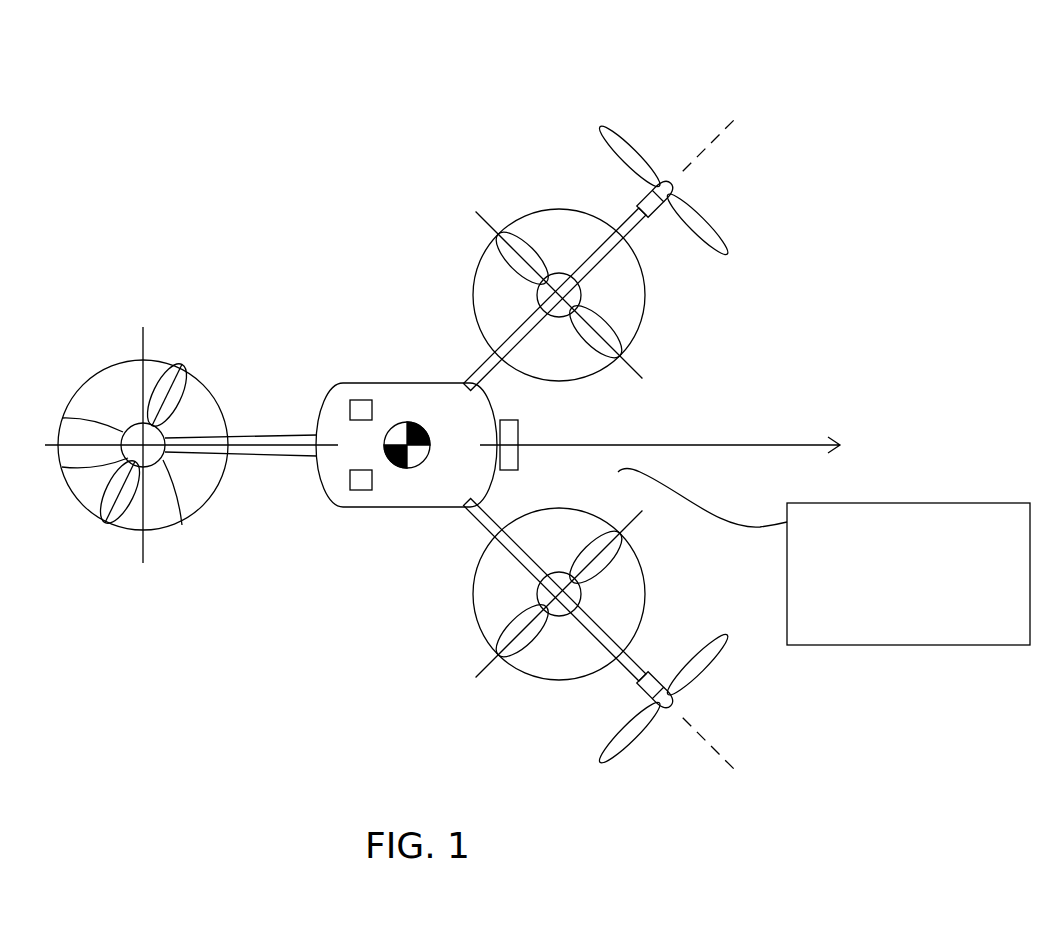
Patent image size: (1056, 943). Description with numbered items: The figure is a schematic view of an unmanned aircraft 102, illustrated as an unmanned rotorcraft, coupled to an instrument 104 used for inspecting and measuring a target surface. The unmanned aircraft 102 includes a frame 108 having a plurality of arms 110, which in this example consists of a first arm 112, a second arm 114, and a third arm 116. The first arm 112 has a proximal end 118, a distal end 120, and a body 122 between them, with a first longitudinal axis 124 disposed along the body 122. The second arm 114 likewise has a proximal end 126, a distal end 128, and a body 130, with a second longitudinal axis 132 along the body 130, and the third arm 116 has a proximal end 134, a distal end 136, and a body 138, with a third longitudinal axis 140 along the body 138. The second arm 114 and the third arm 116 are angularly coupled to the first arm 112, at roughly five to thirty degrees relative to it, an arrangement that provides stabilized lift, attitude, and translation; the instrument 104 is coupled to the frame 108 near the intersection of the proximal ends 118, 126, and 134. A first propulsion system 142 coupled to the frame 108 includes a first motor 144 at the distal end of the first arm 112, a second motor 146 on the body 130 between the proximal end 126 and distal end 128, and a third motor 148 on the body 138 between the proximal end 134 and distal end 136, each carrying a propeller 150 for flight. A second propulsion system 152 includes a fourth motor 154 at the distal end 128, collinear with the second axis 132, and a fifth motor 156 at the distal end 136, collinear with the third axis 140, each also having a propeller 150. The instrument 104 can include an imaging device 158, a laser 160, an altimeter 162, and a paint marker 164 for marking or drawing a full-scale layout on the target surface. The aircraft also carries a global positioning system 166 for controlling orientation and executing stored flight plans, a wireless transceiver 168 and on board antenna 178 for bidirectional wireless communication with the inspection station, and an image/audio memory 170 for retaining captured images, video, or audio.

The unmanned aircraft 102 is at (697, 72).
The instrument 104 is at (518, 460).
The frame 108 is at (241, 430).
The plurality of arms 110 is at (126, 308).
The first arm 112 is at (241, 430).
The second arm 114 is at (581, 276).
The third arm 116 is at (585, 616).
The proximal end 118 is at (318, 440).
The distal end 120 is at (182, 525).
The body 122 is at (278, 428).
The first longitudinal axis 124 is at (62, 467).
The proximal end 126 is at (462, 380).
The distal end 128 is at (636, 206).
The body 130 is at (476, 362).
The second longitudinal axis 132 is at (718, 134).
The proximal end 134 is at (458, 513).
The distal end 136 is at (637, 686).
The body 138 is at (510, 553).
The third longitudinal axis 140 is at (732, 766).
The first propulsion system 142 is at (180, 429).
The first motor 144 is at (62, 418).
The second motor 146 is at (582, 291).
The third motor 148 is at (560, 636).
The propeller 150 is at (166, 362).
The second propulsion system 152 is at (750, 222).
The fourth motor 154 is at (670, 172).
The fifth motor 156 is at (670, 708).
The imaging device 158 is at (906, 523).
The laser 160 is at (906, 557).
The altimeter 162 is at (906, 590).
The paint marker 164 is at (906, 623).
The global positioning system 166 is at (356, 400).
The wireless transceiver 168 is at (345, 537).
The image/audio memory 170 is at (345, 537).
The on board antenna 178 is at (357, 491).